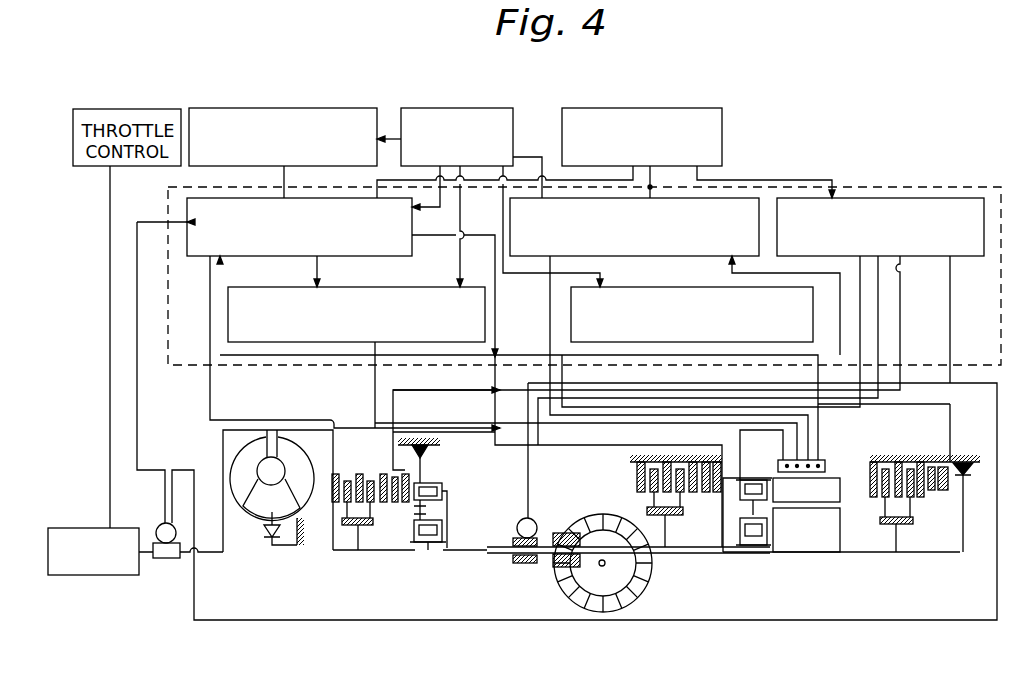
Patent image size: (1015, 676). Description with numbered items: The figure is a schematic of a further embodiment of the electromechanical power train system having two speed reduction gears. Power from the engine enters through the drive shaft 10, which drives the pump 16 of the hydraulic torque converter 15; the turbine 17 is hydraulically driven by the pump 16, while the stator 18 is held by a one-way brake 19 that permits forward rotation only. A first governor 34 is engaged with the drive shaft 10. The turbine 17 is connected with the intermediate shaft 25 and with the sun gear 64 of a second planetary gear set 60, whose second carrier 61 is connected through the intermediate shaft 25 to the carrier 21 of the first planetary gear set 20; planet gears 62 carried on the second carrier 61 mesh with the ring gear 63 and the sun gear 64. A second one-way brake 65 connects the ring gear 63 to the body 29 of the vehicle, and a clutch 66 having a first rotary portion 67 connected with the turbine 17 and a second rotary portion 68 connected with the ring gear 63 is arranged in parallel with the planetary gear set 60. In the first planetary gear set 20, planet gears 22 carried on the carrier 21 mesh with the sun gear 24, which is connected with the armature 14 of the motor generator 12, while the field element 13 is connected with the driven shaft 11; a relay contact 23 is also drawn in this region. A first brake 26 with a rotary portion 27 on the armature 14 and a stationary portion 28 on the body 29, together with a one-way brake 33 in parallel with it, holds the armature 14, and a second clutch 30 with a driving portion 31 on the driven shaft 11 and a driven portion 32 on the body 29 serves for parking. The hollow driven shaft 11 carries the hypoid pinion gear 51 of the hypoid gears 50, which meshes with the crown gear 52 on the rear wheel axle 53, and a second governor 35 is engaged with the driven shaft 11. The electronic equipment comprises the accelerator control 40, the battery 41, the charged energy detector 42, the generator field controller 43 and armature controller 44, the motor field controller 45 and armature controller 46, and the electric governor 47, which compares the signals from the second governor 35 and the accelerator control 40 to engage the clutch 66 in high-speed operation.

The drive shaft 10 is at (149, 560).
The driven shaft 11 is at (723, 555).
The motor generator 12 is at (824, 556).
The field element 13 is at (835, 492).
The armature 14 is at (832, 537).
The hydraulic torque converter 15 is at (262, 521).
The pump 16 is at (297, 457).
The turbine 17 is at (239, 467).
The stator 18 is at (282, 503).
The one-way brake 19 is at (266, 533).
The planetary gear set 20 is at (746, 555).
The carrier 21 is at (730, 556).
The planet gears 22 is at (765, 483).
The relay contact 23 is at (745, 485).
The sun gear 24 is at (768, 545).
The intermediate shaft 25 is at (487, 553).
The first brake 26 is at (651, 526).
The rotary portion 27 is at (677, 500).
The stationary portion 28 is at (638, 476).
The body 29 is at (632, 457).
The second clutch 30 is at (859, 514).
The driving portion 31 is at (912, 512).
The driven portion 32 is at (895, 460).
The one-way brake 33 is at (968, 470).
The first governor 34 is at (158, 524).
The second governor 35 is at (534, 521).
The accelerator control 40 is at (638, 108).
The battery 41 is at (454, 108).
The charged energy detector 42 is at (279, 108).
The field controller 43 is at (196, 257).
The armature controller 44 is at (412, 287).
The field controller 45 is at (760, 213).
The armature controller 46 is at (657, 287).
The electric governor 47 is at (896, 257).
The hypoid gears 50 is at (590, 591).
The hypoid pinion gear 51 is at (533, 563).
The crown gear 52 is at (565, 598).
The rear wheel axle 53 is at (606, 567).
The second planetary gear set 60 is at (444, 521).
The second carrier 61 is at (447, 528).
The planet gears 62 is at (447, 507).
The ring gear 63 is at (445, 492).
The sun gear 64 is at (430, 548).
The second one-way brake 65 is at (433, 455).
The clutch 66 is at (367, 540).
The first rotary portion 67 is at (373, 514).
The second rotary portion 68 is at (360, 478).